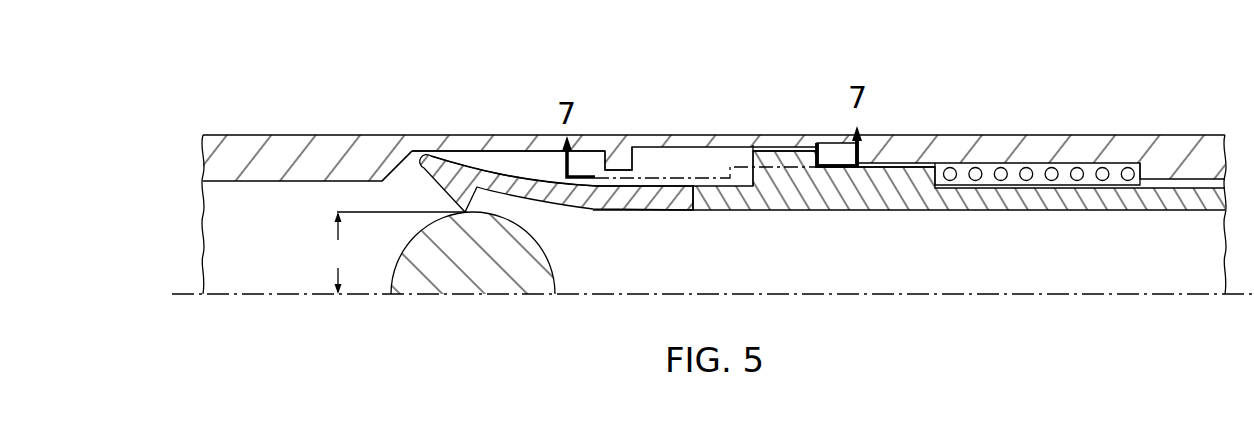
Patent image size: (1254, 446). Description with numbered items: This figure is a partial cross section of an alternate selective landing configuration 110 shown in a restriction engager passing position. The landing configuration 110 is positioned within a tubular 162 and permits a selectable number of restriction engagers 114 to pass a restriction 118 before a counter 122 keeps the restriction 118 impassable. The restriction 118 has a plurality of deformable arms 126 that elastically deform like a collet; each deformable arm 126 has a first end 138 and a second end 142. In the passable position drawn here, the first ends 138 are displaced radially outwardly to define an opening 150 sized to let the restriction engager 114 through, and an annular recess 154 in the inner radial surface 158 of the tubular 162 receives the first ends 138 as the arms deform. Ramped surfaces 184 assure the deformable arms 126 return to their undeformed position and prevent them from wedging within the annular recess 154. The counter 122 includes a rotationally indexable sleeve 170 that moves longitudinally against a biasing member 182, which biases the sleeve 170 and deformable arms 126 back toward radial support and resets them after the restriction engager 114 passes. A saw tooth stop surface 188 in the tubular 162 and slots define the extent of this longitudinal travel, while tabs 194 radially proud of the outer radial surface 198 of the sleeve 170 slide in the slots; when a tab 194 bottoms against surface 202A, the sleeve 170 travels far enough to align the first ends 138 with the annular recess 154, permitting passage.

The landing configuration 110 is at (494, 104).
The restriction engager 114 is at (557, 282).
The restriction 118 is at (579, 210).
The counter 122 is at (827, 118).
The deformable arm 126 is at (514, 172).
The first end 138 is at (443, 153).
The second end 142 is at (662, 212).
The opening 150 is at (392, 253).
The annular recess 154 is at (480, 156).
The inner radial surface 158 is at (281, 189).
The tubular 162 is at (246, 147).
The sleeve 170 is at (768, 212).
The biasing member 182 is at (1000, 164).
The ramped surface 184 is at (398, 168).
The saw tooth stop surface 188 is at (635, 152).
The tab 194 is at (753, 152).
The outer radial surface 198 is at (905, 158).
The surface 202A is at (804, 153).